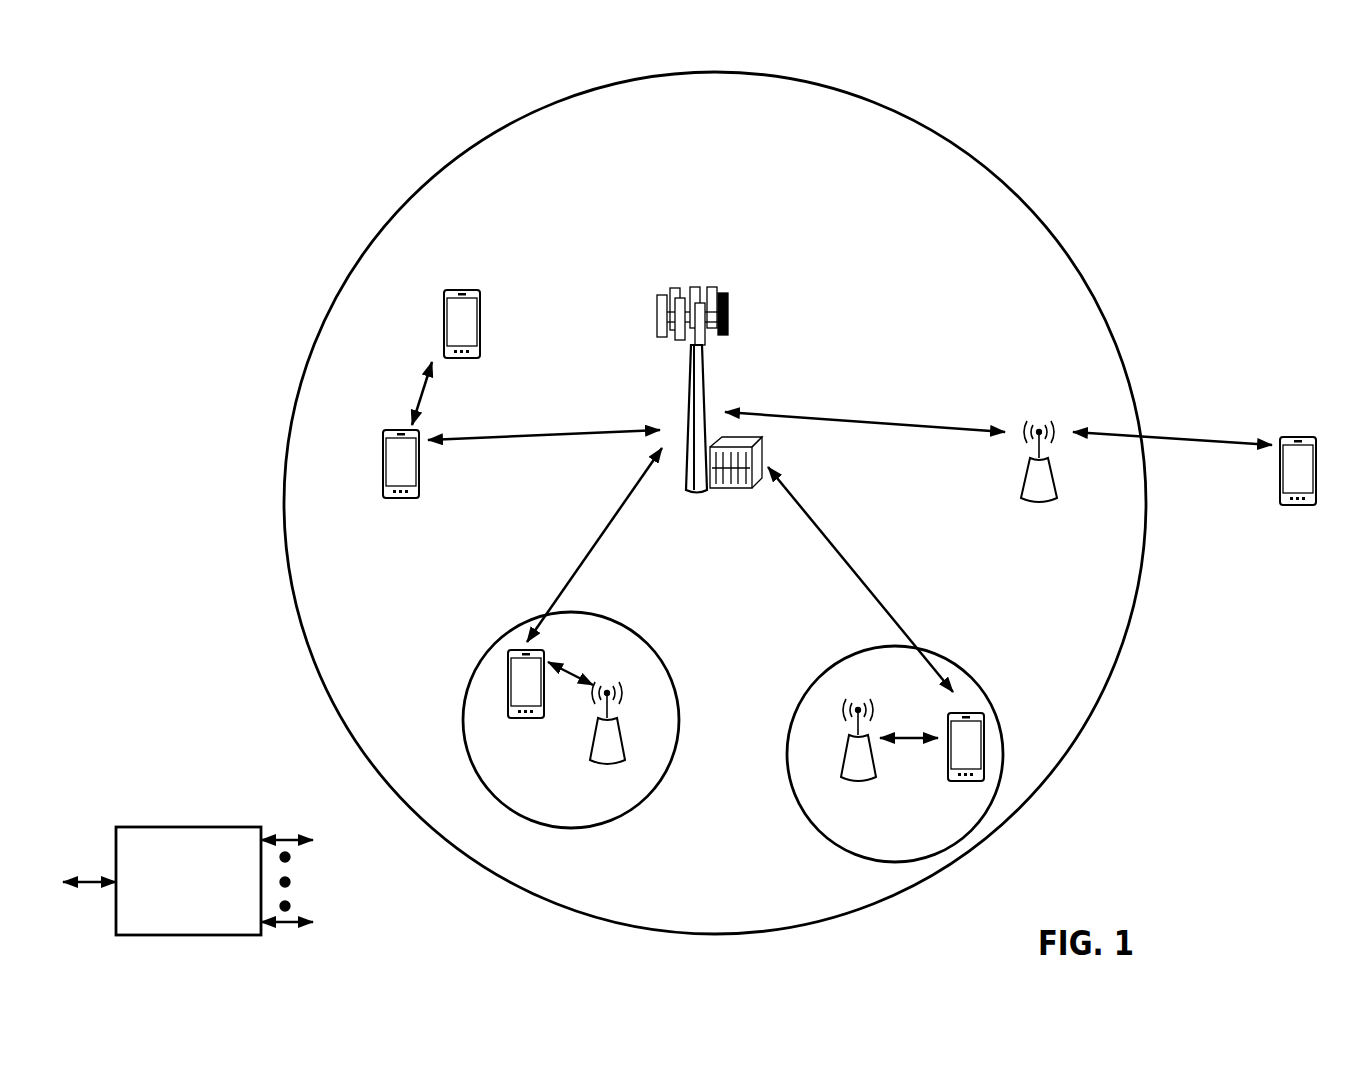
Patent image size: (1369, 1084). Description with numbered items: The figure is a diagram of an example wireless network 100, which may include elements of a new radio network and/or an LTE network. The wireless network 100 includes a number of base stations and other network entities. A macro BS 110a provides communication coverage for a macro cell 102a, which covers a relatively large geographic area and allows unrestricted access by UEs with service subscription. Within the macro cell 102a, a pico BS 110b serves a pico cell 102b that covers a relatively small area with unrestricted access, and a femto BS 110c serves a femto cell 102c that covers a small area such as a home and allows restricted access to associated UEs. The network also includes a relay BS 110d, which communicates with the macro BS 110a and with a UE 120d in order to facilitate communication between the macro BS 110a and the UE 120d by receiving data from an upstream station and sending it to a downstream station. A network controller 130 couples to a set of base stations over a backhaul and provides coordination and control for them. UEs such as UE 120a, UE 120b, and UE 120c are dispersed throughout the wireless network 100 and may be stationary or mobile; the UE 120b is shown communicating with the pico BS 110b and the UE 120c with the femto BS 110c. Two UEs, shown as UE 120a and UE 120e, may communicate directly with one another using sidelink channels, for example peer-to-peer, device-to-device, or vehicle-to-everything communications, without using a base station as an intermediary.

The wireless network 100 is at (168, 66).
The macro cell 102a is at (1002, 181).
The pico cell 102b is at (662, 658).
The femto cell 102c is at (832, 668).
The macro BS 110a is at (701, 282).
The pico BS 110b is at (630, 750).
The femto BS 110c is at (845, 772).
The relay BS 110d is at (1040, 424).
The UE 120a is at (383, 460).
The UE 120b is at (511, 718).
The UE 120c is at (950, 781).
The UE 120d is at (1312, 437).
The UE 120e is at (447, 310).
The network controller 130 is at (186, 827).